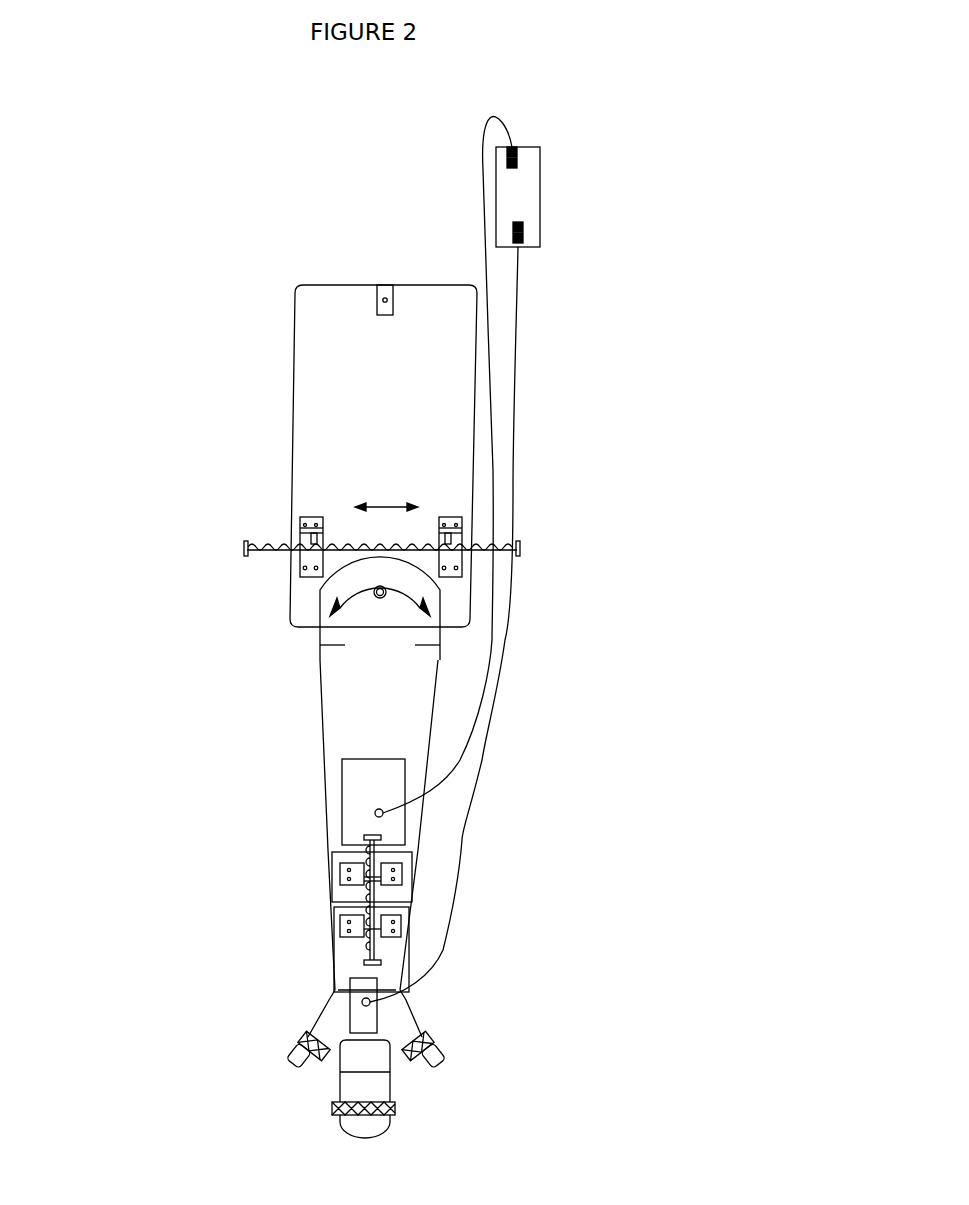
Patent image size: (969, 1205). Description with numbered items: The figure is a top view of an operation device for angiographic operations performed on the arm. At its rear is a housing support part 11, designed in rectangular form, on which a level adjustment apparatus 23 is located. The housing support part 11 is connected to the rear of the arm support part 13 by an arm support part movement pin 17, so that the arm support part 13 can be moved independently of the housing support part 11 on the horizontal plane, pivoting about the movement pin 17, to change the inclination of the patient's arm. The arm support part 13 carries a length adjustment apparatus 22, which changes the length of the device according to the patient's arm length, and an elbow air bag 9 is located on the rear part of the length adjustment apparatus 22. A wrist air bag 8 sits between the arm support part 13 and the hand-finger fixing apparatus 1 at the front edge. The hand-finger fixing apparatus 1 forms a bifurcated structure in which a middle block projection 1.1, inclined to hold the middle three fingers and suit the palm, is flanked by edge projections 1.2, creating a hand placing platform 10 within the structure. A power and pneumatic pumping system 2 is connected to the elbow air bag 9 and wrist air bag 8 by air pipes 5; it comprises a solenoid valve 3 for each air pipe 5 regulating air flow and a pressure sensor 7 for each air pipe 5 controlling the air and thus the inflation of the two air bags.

The hand-finger fixing apparatus 1 is at (273, 1110).
The middle block projection 1.1 is at (375, 1113).
The edge projection 1.2 is at (418, 1044).
The power and pneumatic pumping system 2 is at (535, 147).
The selenoid valve 3 is at (512, 242).
The air hose 5 is at (485, 695).
The pressure sensor 7 is at (513, 225).
The wrist air bag 8 is at (362, 990).
The elbow air bag 9 is at (363, 798).
The hand placing platform 10 is at (375, 1090).
The housing support part 11 is at (270, 352).
The arm support part 13 is at (277, 666).
The arm support part movement pin 17 is at (373, 595).
The length adjustment apparatus 22 is at (397, 877).
The level control apparatus 23 is at (370, 547).